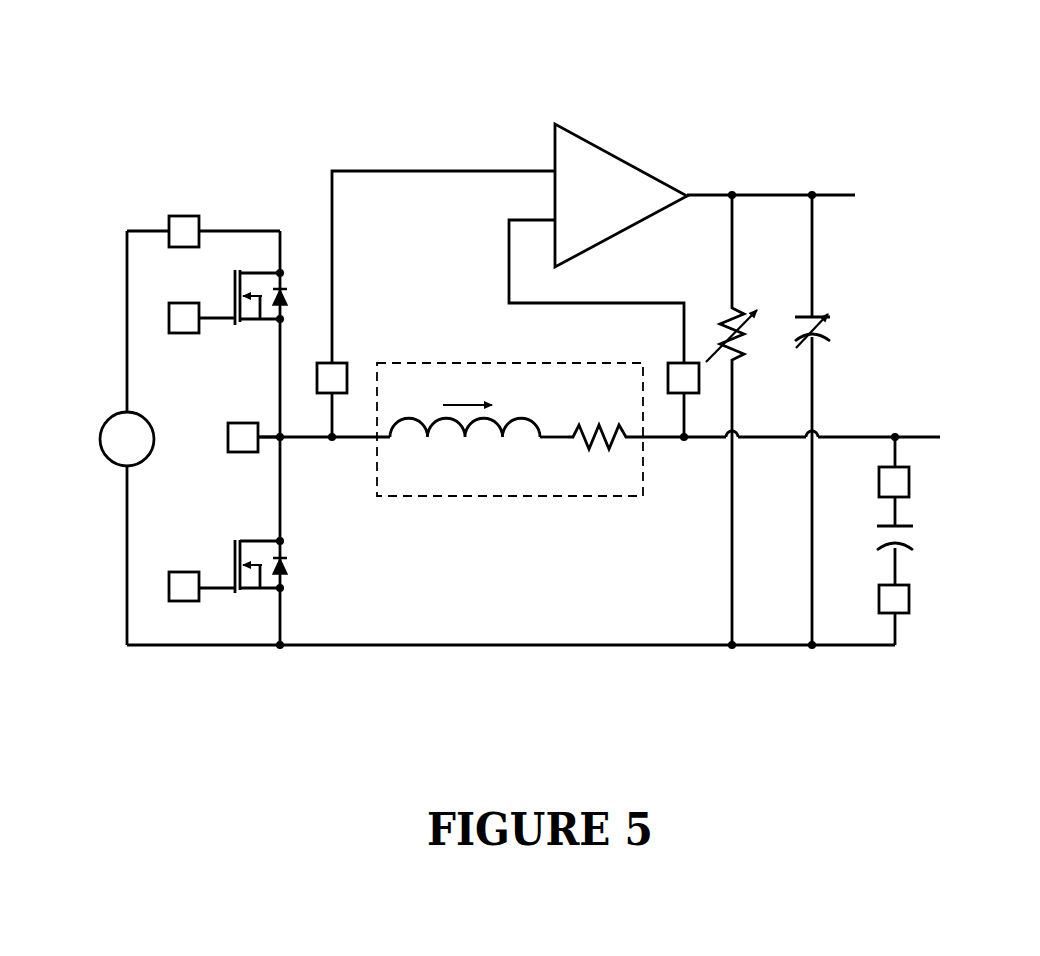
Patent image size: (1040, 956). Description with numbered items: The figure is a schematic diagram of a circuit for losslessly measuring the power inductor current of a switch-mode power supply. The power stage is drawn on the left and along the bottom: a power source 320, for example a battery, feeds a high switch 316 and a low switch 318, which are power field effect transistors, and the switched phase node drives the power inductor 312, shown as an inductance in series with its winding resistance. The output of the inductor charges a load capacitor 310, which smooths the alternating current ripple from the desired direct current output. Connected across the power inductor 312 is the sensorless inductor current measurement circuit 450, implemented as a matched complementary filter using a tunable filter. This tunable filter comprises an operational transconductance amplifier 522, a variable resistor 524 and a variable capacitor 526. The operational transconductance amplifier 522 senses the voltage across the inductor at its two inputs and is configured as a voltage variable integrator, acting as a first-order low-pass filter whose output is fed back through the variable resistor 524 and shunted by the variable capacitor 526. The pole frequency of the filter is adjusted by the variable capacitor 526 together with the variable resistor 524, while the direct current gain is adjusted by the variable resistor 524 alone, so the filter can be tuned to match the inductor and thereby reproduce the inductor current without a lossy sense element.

The sensorless inductor current measurement circuit 450 is at (675, 52).
The operational transconductance amplifier 522 is at (644, 167).
The variable resistor 524 is at (740, 312).
The variable capacitor 526 is at (834, 316).
The power inductor 312 is at (458, 364).
The high switch 316 is at (235, 300).
The low switch 318 is at (235, 566).
The power source 320 is at (152, 431).
The load capacitor 310 is at (901, 528).